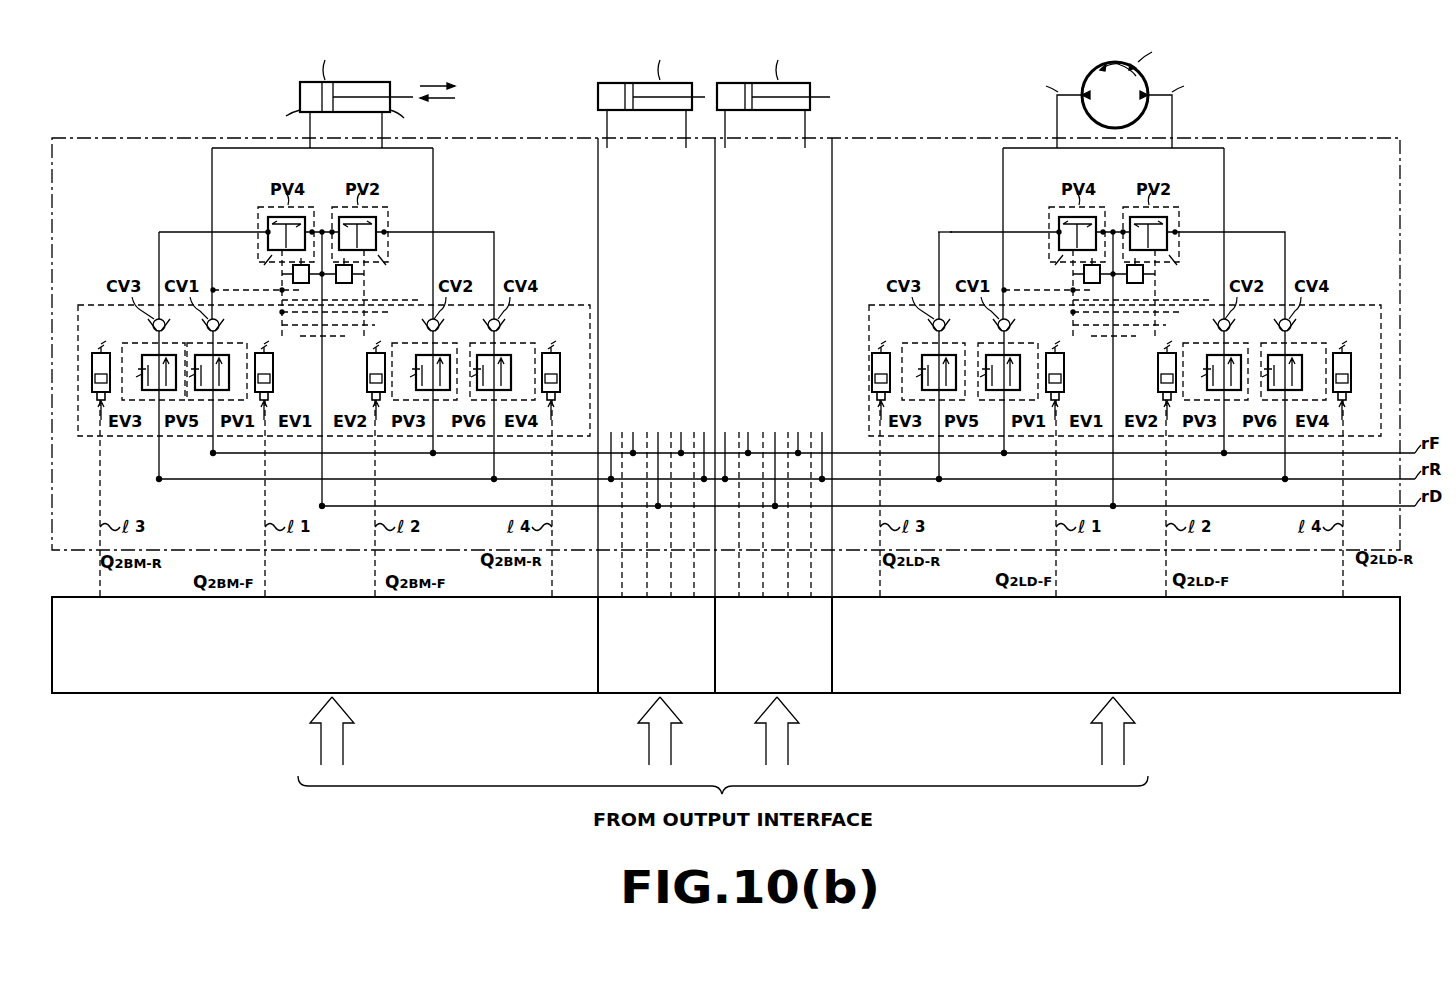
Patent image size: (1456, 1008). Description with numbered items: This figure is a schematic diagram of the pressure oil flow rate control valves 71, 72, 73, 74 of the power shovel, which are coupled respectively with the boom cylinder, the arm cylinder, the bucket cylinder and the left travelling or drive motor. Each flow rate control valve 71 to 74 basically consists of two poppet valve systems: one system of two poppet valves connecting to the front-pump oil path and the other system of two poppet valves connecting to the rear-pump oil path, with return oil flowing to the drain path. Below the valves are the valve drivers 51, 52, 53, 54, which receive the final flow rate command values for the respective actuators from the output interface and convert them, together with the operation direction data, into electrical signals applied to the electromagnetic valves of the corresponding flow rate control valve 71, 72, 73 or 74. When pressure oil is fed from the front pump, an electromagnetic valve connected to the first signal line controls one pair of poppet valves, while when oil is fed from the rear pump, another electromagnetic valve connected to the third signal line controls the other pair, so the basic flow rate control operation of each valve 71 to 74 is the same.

The valve driver 51 is at (517, 697).
The valve driver 52 is at (697, 697).
The valve driver 53 is at (818, 697).
The valve driver 54 is at (1313, 697).
The pressure oil flow rate control valve 71 is at (483, 138).
The pressure oil flow rate control valve 72 is at (599, 138).
The pressure oil flow rate control valve 73 is at (820, 136).
The pressure oil flow rate control valve 74 is at (1306, 138).